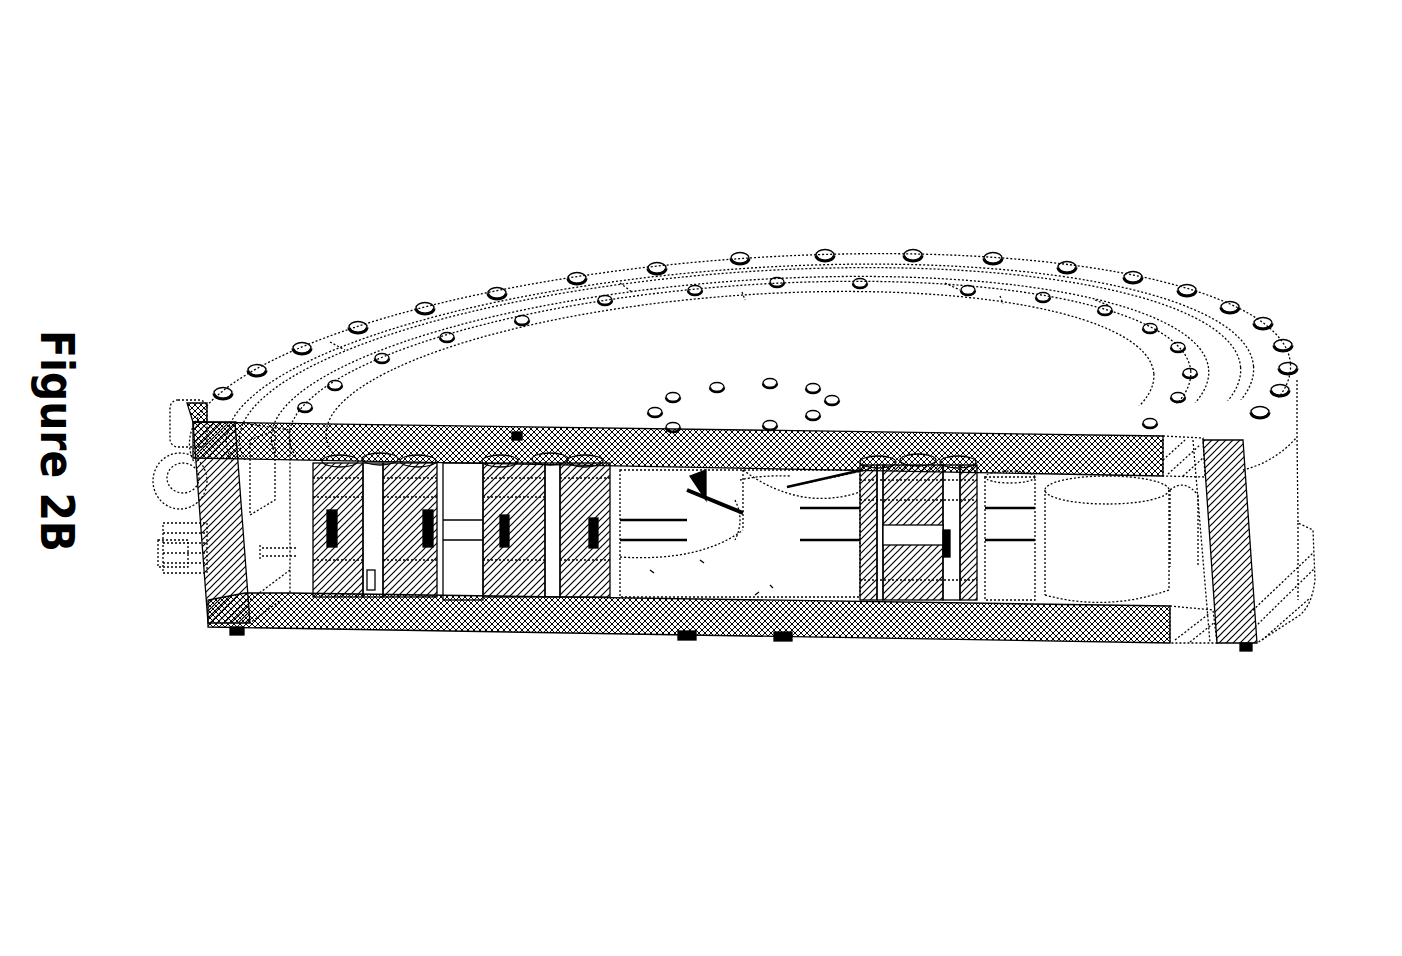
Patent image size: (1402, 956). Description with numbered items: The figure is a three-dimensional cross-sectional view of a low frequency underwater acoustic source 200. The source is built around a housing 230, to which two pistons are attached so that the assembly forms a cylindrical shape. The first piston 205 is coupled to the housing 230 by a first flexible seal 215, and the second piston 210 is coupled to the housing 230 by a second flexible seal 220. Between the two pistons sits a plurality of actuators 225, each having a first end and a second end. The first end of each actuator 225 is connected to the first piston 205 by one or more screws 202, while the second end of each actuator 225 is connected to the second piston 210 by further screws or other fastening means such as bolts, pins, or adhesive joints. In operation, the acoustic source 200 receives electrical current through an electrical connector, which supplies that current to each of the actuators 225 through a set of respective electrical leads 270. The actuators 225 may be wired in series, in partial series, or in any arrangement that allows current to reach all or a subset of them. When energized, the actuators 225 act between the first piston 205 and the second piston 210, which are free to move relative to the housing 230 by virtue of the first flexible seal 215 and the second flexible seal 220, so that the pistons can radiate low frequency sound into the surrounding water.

The low frequency underwater acoustic source 200 is at (1054, 160).
The first piston 205 is at (835, 337).
The screws 202 is at (516, 432).
The first flexible seal 215 is at (1190, 440).
The electrical leads 270 is at (462, 507).
The second piston 210 is at (464, 612).
The plurality of actuators 225 is at (968, 512).
The second flexible seal 220 is at (1195, 645).
The housing 230 is at (1277, 523).